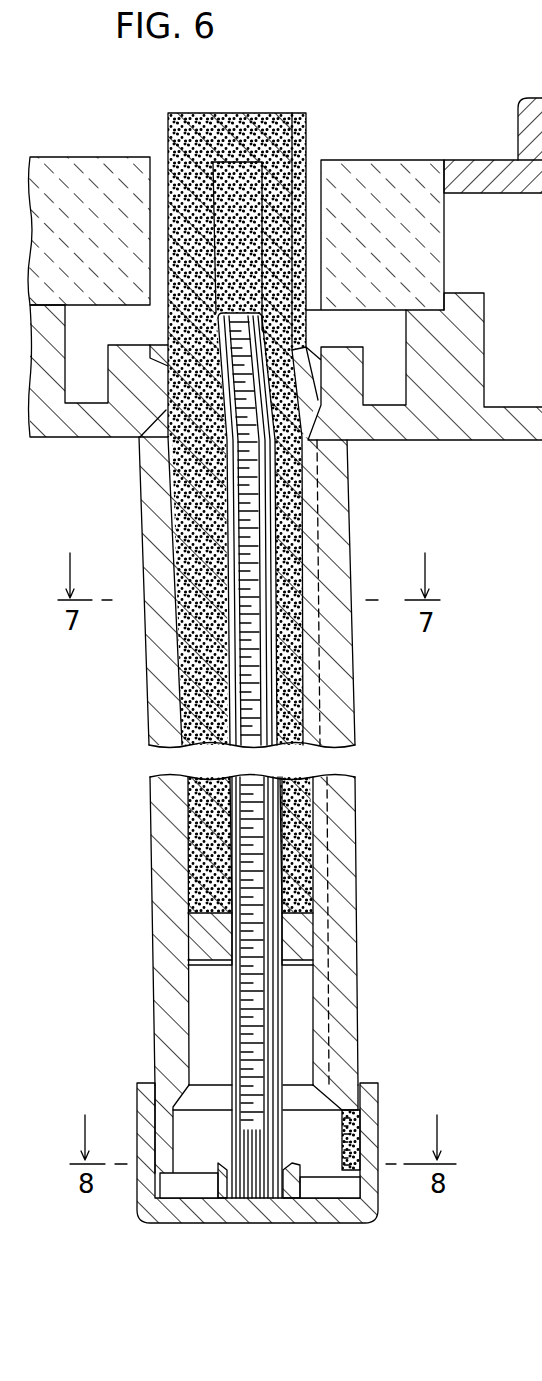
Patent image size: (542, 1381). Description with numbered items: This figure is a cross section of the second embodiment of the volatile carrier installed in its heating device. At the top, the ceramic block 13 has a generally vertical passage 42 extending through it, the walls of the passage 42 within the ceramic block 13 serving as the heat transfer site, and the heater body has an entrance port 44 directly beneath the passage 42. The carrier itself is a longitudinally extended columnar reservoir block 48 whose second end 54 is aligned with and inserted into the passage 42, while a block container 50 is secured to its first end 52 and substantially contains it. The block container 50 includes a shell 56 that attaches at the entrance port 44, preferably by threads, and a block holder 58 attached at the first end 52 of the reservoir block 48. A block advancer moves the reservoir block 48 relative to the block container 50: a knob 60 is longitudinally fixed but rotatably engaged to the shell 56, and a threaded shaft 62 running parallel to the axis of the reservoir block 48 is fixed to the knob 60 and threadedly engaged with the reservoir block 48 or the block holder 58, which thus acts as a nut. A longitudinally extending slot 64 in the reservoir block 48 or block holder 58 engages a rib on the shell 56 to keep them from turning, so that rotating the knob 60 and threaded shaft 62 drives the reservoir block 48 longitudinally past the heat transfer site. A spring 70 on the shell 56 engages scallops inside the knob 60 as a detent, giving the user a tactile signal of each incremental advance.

The ceramic block 13 is at (80, 166).
The passage 42 is at (320, 160).
The entrance port 44 is at (345, 440).
The reservoir block 48 is at (172, 470).
The block container 50 is at (356, 825).
The first end 52 is at (197, 883).
The second end 54 is at (168, 128).
The shell 56 is at (347, 882).
The block holder 58 is at (195, 943).
The knob 60 is at (373, 1085).
The threaded shaft 62 is at (258, 668).
The slot 64 is at (303, 113).
The spring 70 is at (380, 1166).